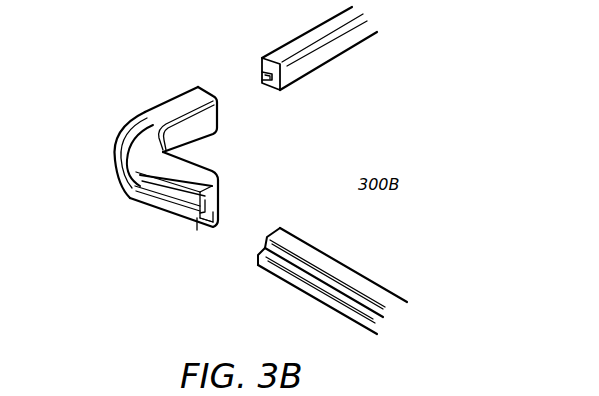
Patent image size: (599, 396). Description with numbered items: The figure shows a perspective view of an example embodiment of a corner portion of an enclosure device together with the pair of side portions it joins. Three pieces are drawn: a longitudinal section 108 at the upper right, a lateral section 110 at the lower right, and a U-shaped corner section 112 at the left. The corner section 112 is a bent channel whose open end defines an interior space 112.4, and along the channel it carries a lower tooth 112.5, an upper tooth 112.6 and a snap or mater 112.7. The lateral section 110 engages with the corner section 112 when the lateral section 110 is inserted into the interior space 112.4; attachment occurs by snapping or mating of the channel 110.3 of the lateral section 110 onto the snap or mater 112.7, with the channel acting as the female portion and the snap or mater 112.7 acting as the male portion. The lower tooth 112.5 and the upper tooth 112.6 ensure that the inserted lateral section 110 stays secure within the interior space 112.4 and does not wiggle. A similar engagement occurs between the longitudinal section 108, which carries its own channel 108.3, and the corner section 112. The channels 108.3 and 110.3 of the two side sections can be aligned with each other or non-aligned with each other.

The longitudinal section 108 is at (303, 48).
The channel 108.3 is at (263, 62).
The lateral section 110 is at (343, 287).
The channel 110.3 is at (395, 262).
The corner section 112 is at (166, 177).
The interior space 112.4 is at (196, 236).
The lower tooth 112.5 is at (162, 218).
The upper tooth 112.6 is at (145, 191).
The snap or mater 112.7 is at (165, 206).